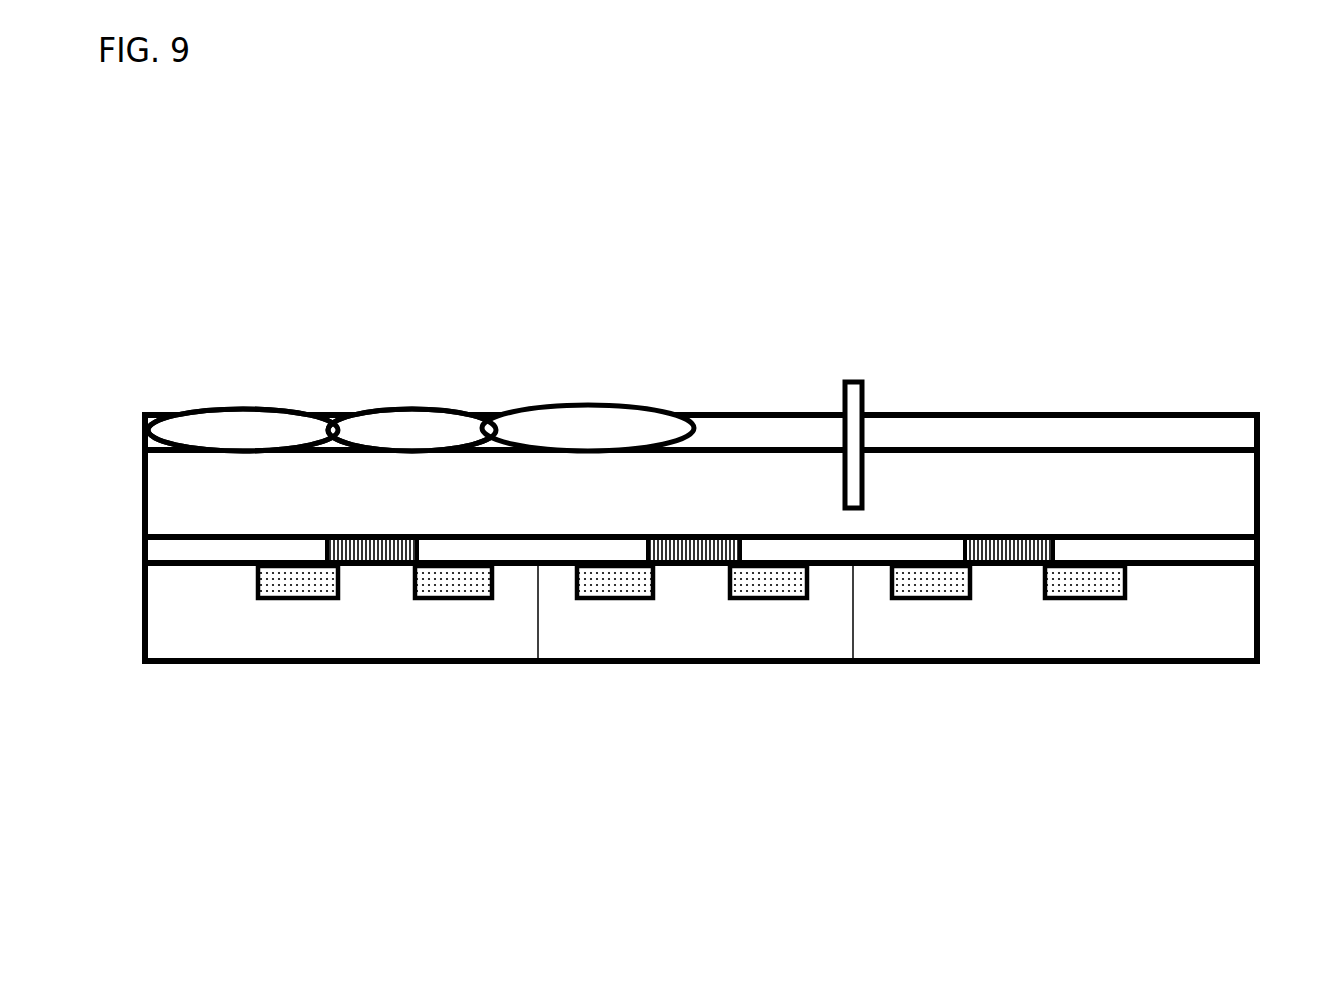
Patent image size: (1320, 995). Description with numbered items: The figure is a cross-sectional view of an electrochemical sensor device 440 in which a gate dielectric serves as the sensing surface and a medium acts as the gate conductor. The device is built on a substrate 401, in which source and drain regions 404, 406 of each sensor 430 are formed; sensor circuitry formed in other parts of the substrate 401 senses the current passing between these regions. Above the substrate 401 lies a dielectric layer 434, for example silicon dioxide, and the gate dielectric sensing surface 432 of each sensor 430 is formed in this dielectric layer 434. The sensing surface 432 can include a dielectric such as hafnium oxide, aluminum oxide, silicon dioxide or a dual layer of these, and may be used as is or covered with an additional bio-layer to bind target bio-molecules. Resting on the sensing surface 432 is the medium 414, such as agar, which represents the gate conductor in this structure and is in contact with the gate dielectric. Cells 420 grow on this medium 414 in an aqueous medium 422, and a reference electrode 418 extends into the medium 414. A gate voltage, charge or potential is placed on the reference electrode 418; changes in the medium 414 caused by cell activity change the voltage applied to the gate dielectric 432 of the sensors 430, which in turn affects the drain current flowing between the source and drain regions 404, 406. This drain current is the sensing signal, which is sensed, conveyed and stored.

The electrochemical sensor device 440 is at (1166, 84).
The substrate 401 is at (170, 638).
The source region 404 is at (307, 585).
The drain region 406 is at (452, 582).
The medium 414 is at (183, 497).
The reference electrode 418 is at (856, 381).
The cells 420 is at (565, 422).
The aqueous medium 422 is at (1190, 440).
The sensor 430 is at (1045, 485).
The sensing surface 432 is at (368, 568).
The dielectric layer 434 is at (172, 547).